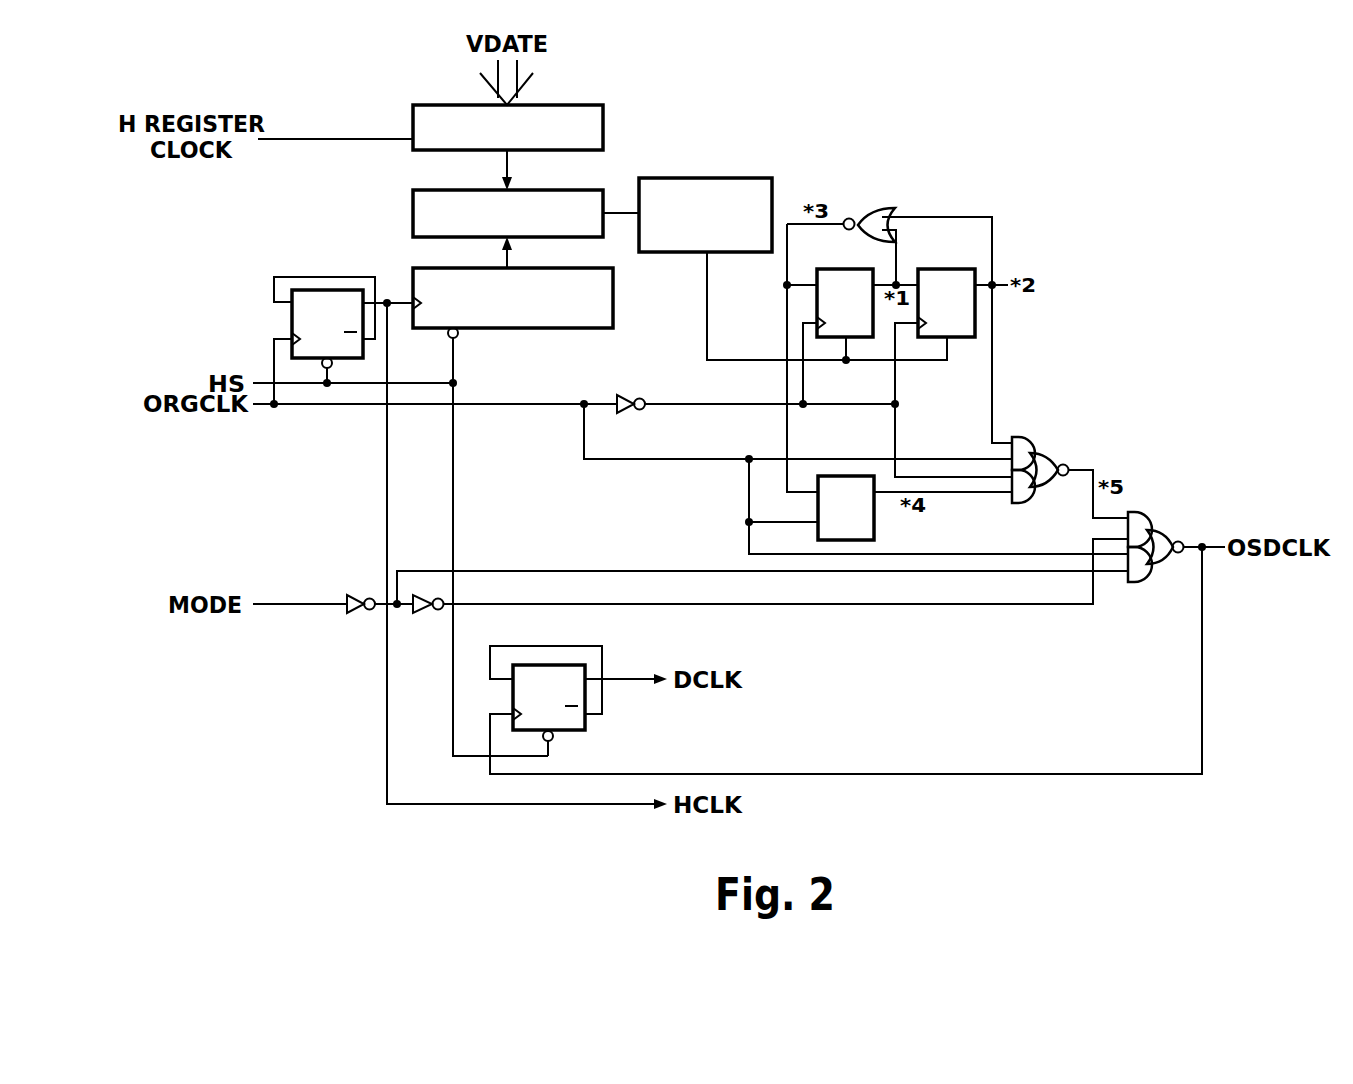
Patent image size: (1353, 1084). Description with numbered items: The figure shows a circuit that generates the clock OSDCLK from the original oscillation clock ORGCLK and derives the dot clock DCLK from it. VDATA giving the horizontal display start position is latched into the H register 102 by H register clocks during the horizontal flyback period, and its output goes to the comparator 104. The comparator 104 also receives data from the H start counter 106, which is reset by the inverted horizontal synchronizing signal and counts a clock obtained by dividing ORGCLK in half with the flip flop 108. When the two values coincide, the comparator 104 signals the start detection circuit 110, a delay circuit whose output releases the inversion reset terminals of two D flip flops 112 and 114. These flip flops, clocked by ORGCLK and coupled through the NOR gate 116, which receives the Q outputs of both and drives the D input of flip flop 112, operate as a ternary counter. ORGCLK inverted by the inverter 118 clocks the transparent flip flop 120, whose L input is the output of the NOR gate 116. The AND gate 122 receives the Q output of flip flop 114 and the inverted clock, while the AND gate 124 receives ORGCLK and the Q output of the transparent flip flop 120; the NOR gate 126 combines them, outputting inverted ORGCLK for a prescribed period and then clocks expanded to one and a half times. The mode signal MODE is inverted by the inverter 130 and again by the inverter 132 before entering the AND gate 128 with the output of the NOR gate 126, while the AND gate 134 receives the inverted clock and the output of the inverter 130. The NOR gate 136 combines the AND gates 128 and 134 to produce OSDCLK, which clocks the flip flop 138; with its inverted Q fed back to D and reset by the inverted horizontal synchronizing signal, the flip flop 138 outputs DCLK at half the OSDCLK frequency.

The H register 102 is at (412, 107).
The comparator 104 is at (412, 203).
The H start counter 106 is at (615, 292).
The flip flop 108 is at (292, 318).
The start detection circuit 110 is at (733, 253).
The D flip flop 112 is at (853, 268).
The D flip flop 114 is at (972, 268).
The NOR gate 116 is at (872, 208).
The inverter 118 is at (630, 411).
The transparent flip flop 120 is at (876, 530).
The AND gate 122 is at (1027, 437).
The AND gate 124 is at (1032, 503).
The NOR gate 126 is at (1068, 458).
The AND gate 128 is at (1142, 512).
The inverter 130 is at (345, 598).
The inverter 132 is at (430, 612).
The AND gate 134 is at (1144, 582).
The NOR gate 136 is at (1170, 535).
The flip flop 138 is at (572, 733).